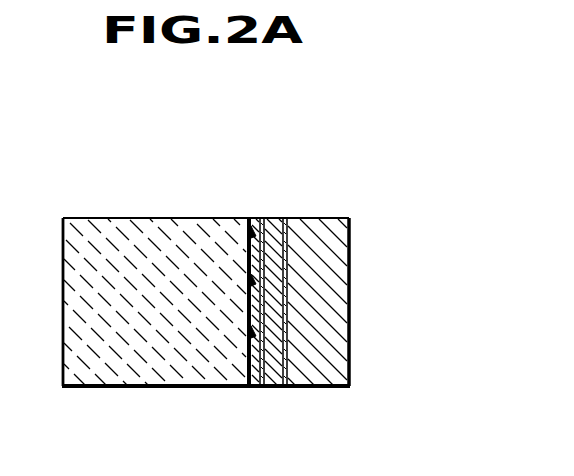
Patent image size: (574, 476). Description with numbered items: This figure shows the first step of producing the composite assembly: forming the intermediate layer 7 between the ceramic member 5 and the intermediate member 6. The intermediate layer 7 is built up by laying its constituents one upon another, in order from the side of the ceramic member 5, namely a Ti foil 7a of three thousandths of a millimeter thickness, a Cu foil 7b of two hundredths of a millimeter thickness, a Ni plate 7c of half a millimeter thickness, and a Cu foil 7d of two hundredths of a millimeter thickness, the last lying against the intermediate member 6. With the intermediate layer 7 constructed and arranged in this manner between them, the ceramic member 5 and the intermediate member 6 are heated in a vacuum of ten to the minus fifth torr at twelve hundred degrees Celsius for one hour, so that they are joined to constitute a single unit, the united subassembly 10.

The ceramic member 5 is at (130, 384).
The intermediate member 6 is at (325, 384).
The intermediate layer 7 is at (362, 143).
The Ti foil 7a is at (247, 218).
The Cu foil 7b is at (262, 218).
The Ni plate 7c is at (274, 218).
The Cu foil 7d is at (287, 218).
The united subassembly 10 is at (371, 314).